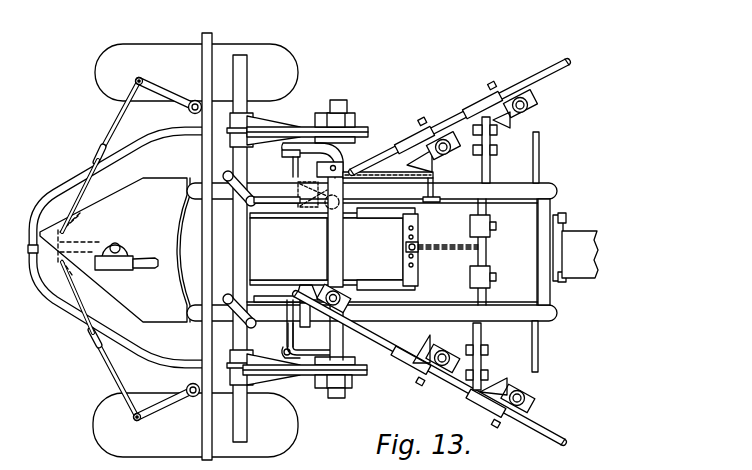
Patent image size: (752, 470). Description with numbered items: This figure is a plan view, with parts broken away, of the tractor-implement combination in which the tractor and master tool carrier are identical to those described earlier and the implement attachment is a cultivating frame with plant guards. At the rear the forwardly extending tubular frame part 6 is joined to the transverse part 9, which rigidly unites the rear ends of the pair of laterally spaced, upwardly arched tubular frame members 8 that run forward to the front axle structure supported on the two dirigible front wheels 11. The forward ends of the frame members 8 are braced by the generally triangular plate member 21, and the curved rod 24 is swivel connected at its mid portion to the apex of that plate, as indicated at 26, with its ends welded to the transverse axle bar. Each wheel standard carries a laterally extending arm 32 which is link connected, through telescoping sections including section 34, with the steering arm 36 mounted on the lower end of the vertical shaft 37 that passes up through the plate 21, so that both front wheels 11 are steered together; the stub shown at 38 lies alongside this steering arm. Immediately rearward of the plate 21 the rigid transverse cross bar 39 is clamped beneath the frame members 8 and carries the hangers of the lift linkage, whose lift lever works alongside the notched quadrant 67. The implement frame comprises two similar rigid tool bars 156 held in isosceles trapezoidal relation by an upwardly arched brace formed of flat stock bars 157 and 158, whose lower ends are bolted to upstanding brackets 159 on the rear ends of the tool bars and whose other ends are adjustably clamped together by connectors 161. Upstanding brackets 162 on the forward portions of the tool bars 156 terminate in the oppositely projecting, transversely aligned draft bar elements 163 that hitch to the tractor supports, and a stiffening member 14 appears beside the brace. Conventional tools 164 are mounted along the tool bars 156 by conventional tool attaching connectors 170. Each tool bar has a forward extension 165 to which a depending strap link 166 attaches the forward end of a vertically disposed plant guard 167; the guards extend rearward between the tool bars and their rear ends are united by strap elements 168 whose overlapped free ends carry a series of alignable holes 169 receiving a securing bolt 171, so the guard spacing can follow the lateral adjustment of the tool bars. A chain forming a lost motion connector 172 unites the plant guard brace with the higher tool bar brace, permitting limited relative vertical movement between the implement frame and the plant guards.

The tubular frame part 6 is at (587, 232).
The tubular frame members 8 is at (549, 183).
The transverse part 9 is at (550, 253).
The dirigible front wheels 11 is at (141, 50).
The upright post 14 is at (537, 163).
The triangular plate member 21 is at (146, 215).
The curved rod 24 is at (50, 203).
The swivel connection 26 is at (30, 256).
The laterally extending arm 32 is at (168, 88).
The telescoping link section 34 is at (96, 163).
The steering arm 36 is at (84, 246).
The shaft 37 is at (118, 243).
The shaft stub 38 is at (152, 259).
The transverse frame bar 39 is at (247, 73).
The notched quadrant 67 is at (410, 175).
The tool bars 156 is at (557, 70).
The brace bar 157 is at (488, 177).
The brace bar 158 is at (475, 337).
The upstanding brackets 159 is at (480, 155).
The connectors 161 is at (488, 218).
The upstanding brackets 162 is at (360, 153).
The draft bar elements 163 is at (346, 104).
The tools 164 is at (417, 131).
The forward extension 165 is at (268, 200).
The strap link 166 is at (313, 215).
The plant guard 167 is at (307, 219).
The strap elements 168 is at (371, 217).
The alignable holes 169 is at (406, 228).
The tool attaching connector 170 is at (519, 78).
The securing bolt 171 is at (419, 243).
The lost motion connector 172 is at (452, 249).